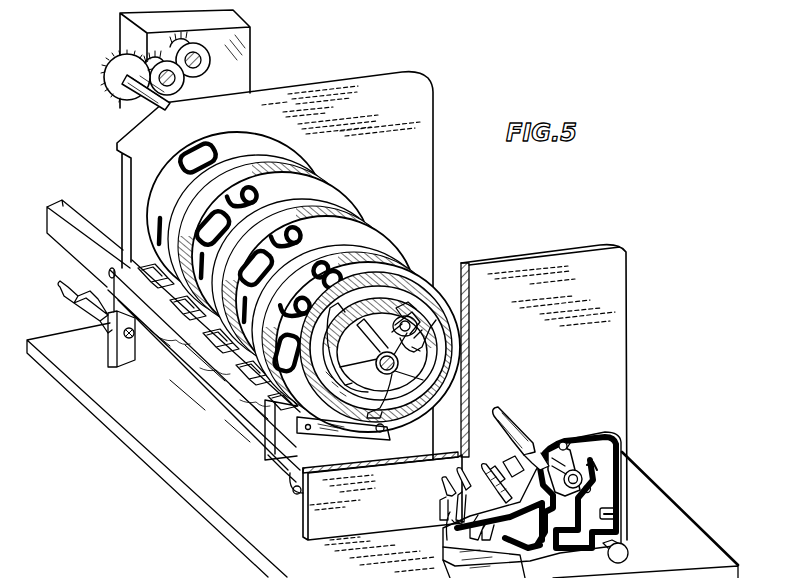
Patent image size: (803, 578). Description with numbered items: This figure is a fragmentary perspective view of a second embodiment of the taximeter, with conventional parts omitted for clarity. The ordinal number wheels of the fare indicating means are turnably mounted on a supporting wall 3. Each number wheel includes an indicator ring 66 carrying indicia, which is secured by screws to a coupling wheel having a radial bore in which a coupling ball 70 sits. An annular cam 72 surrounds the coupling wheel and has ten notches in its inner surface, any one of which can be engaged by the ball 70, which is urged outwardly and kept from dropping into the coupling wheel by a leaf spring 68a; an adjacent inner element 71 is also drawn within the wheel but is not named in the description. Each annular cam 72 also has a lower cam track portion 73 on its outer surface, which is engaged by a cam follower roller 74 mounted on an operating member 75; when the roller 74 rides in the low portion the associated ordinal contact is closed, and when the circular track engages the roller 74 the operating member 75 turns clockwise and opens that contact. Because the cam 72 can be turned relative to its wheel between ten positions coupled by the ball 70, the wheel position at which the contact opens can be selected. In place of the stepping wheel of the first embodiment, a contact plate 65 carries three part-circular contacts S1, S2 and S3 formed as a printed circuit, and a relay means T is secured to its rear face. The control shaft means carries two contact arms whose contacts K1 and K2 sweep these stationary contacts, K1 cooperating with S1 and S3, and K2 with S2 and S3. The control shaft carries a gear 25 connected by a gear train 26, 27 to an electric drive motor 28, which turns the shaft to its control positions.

The supporting wall 3 is at (430, 130).
The electric drive motor 28 is at (243, 43).
The gear train gear 27 is at (203, 55).
The gear train gear 26 is at (175, 82).
The gear 25 is at (112, 88).
The indicator ring 66 is at (430, 300).
The annular cam 72 is at (440, 353).
The lower cam track portion 73 is at (395, 412).
The spring clip 71 is at (327, 355).
The coupling ball 70 is at (405, 327).
The leaf spring 68a is at (430, 322).
The operating member 75 is at (338, 432).
The cam follower roller 74 is at (403, 428).
The contact plate 65 is at (620, 436).
The part-circular contact S1 is at (563, 443).
The part-circular contact S2 is at (588, 465).
The part-circular contact S3 is at (538, 468).
The contact K1 is at (572, 440).
The contact K2 is at (585, 492).
The relay means T is at (513, 470).